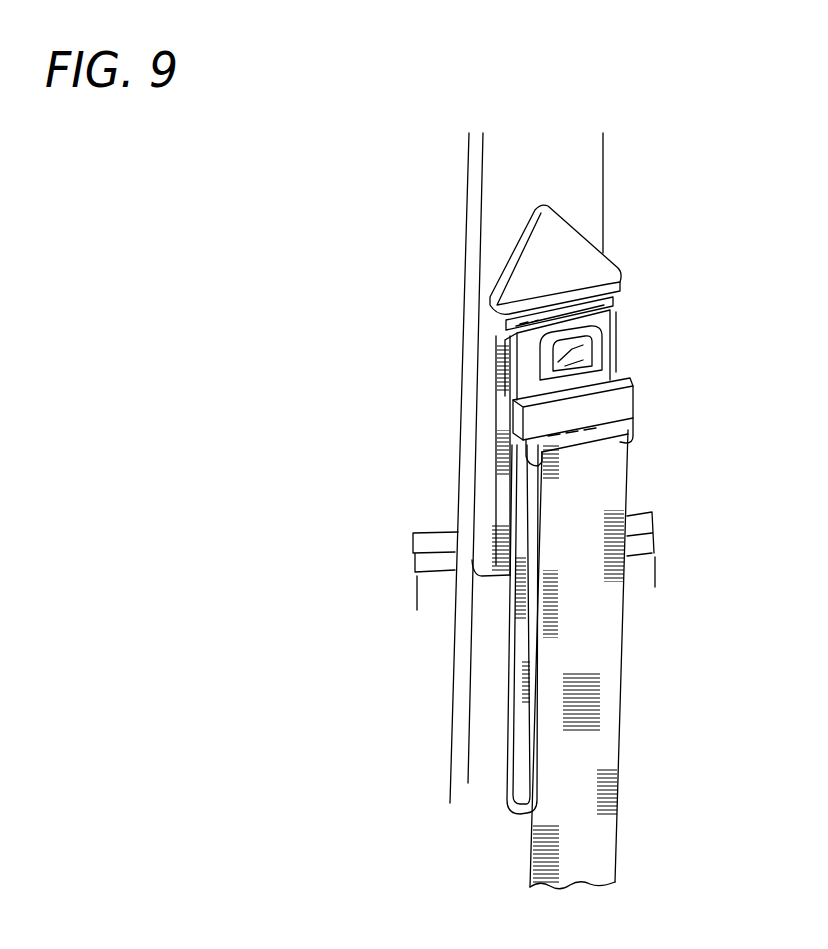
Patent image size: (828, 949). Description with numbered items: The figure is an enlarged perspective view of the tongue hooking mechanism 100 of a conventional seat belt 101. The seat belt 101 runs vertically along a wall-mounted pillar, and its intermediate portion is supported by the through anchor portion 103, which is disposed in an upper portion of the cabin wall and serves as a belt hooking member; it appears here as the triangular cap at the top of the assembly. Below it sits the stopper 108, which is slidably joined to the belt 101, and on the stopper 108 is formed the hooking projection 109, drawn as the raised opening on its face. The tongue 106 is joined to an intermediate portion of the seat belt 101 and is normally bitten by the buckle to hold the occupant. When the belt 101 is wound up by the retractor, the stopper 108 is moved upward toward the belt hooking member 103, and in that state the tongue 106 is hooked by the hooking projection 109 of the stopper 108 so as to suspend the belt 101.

The tongue hooking mechanism 100 is at (619, 324).
The seat belt 101 is at (492, 467).
The through anchor portion 103 is at (609, 256).
The tongue 106 is at (634, 404).
The stopper 108 is at (613, 307).
The hooking projection 109 is at (610, 338).